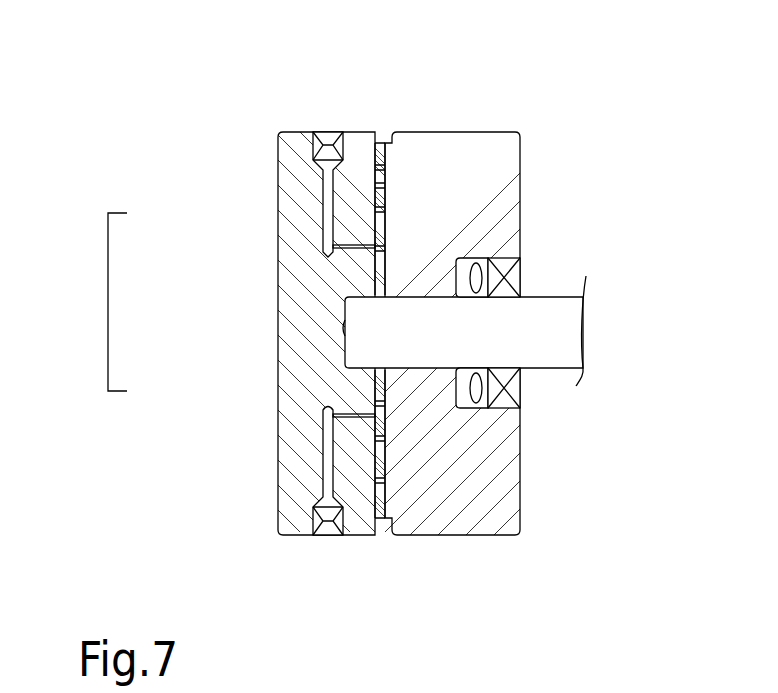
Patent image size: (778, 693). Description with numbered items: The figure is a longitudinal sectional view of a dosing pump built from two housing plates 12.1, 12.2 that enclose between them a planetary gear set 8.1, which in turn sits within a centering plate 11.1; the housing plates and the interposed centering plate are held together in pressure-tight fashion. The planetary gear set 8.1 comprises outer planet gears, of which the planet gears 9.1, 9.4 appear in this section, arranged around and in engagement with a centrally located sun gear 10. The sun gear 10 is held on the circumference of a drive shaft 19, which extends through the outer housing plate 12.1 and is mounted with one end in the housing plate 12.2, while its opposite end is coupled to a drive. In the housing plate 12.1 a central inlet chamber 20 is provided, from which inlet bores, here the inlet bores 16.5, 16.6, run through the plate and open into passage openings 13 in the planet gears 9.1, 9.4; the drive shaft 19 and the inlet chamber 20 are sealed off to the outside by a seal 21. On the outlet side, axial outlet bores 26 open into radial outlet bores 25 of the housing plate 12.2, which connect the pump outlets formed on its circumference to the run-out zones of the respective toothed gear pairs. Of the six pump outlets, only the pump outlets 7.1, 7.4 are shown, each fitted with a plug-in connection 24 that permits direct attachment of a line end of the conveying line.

The pump outlet 7.1 is at (330, 135).
The pump outlet 7.4 is at (323, 535).
The planetary gear set 8.1 is at (108, 290).
The planet gear 9.1 is at (378, 180).
The planet gear 9.4 is at (377, 477).
The sun gear 10 is at (372, 383).
The centering plate 11.1 is at (385, 135).
The housing plate 12.1 is at (490, 133).
The housing plate 12.2 is at (298, 137).
The passage opening 13 is at (378, 200).
The inlet bore 16.5 is at (477, 393).
The inlet bore 16.6 is at (480, 272).
The drive shaft 19 is at (567, 353).
The inlet chamber 20 is at (552, 253).
The seal 21 is at (517, 277).
The plug-in connection 24 is at (316, 518).
The radial outlet bore 25 is at (335, 195).
The axial outlet bore 26 is at (387, 238).